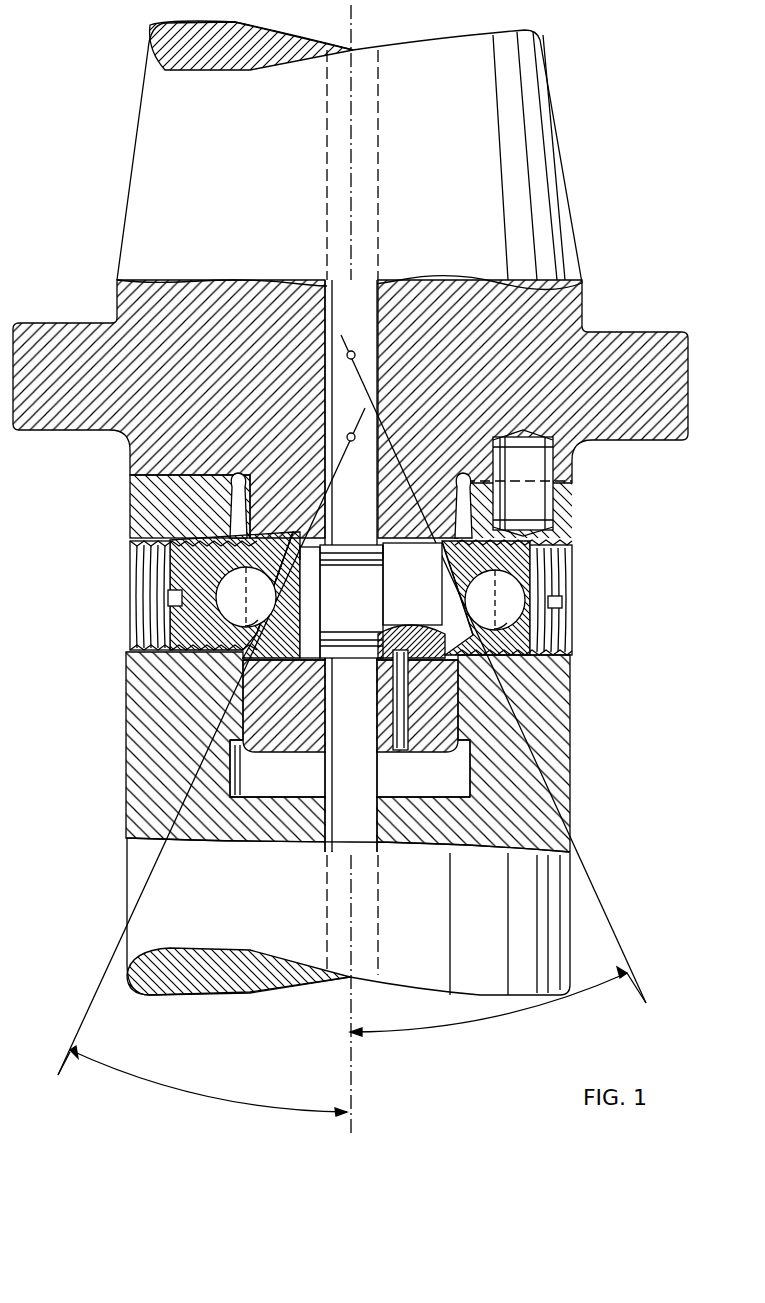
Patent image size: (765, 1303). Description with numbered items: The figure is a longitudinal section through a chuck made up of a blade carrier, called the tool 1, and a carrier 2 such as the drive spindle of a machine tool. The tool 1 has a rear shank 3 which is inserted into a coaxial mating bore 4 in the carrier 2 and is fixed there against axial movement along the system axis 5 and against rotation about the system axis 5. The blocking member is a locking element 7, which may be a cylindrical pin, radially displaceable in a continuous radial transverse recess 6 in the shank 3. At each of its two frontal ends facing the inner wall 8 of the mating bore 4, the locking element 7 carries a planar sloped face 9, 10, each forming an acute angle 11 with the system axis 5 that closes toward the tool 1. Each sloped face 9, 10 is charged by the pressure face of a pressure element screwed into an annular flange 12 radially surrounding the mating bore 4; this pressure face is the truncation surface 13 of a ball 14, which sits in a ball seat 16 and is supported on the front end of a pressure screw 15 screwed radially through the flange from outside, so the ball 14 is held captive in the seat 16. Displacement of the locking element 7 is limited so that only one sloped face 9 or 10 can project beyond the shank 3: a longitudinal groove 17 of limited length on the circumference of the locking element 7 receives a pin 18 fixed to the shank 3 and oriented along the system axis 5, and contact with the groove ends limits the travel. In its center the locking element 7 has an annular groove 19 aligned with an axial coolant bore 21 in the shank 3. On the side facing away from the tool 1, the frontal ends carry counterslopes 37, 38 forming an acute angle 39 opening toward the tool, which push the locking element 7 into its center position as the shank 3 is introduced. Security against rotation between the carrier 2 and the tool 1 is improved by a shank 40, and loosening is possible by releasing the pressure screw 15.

The tool 1 is at (584, 218).
The carrier 2 is at (576, 769).
The shank 3 is at (435, 722).
The mating bore 4 is at (243, 707).
The system axis 5 is at (352, 22).
The transverse recess 6 is at (270, 553).
The locking element 7 is at (402, 535).
The inner wall 8 is at (252, 745).
The sloped face 9 is at (283, 563).
The sloped face 10 is at (452, 540).
The acute angle 11 is at (197, 1103).
The annular flange 12 is at (545, 700).
The truncation surface 13 is at (273, 612).
The ball 14 is at (470, 592).
The pressure screw 15 is at (170, 580).
The ball seat 16 is at (220, 612).
The longitudinal groove 17 is at (420, 655).
The pin 18 is at (397, 750).
The annular groove 19 is at (367, 547).
The axial coolant bore 21 is at (380, 327).
The counterslope 37 is at (272, 740).
The counterslope 38 is at (455, 655).
The acute angle 39 is at (370, 642).
The shank 40 is at (540, 467).